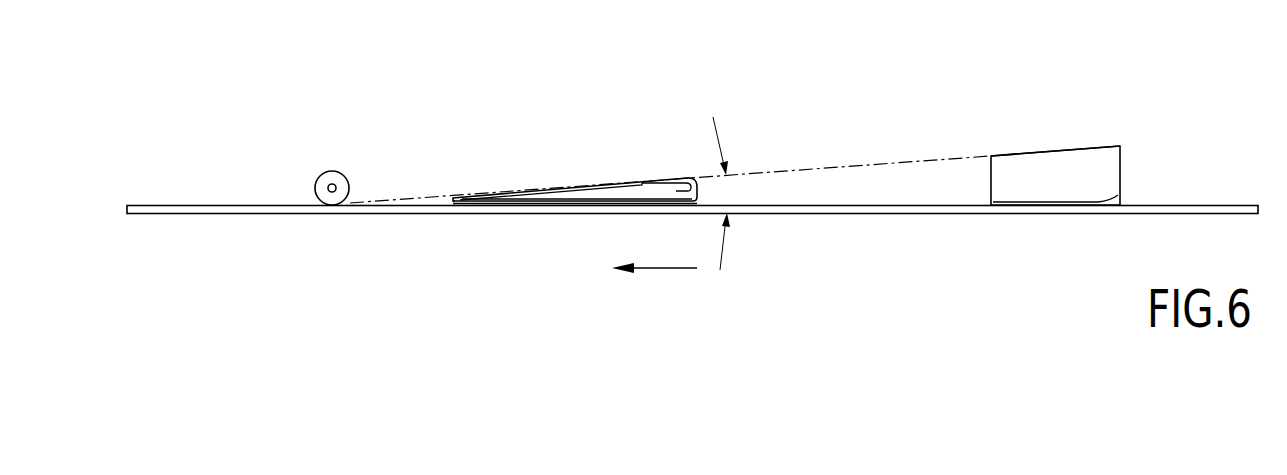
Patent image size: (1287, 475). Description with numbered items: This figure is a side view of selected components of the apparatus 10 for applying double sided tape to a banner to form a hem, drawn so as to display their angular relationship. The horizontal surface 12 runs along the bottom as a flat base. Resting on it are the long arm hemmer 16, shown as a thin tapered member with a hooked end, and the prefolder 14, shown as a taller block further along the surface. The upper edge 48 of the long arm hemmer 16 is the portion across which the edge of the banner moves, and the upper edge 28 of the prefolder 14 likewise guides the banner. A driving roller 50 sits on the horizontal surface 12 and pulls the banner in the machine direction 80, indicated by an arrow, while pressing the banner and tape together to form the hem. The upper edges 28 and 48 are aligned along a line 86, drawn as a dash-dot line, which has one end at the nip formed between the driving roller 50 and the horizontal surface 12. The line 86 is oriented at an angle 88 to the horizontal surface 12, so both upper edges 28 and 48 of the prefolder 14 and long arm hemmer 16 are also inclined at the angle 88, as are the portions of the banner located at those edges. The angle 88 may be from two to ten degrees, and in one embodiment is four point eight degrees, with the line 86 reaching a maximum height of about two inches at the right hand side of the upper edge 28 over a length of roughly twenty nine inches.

The apparatus 10 is at (476, 95).
The horizontal surface 12 is at (269, 200).
The prefolder 14 is at (1030, 188).
The long arm hemmer 16 is at (558, 199).
The upper edge 28 is at (1058, 147).
The upper edge 48 is at (577, 185).
The driving roller 50 is at (343, 172).
The machine direction 80 is at (660, 268).
The line 86 is at (887, 162).
The angle 88 is at (725, 190).